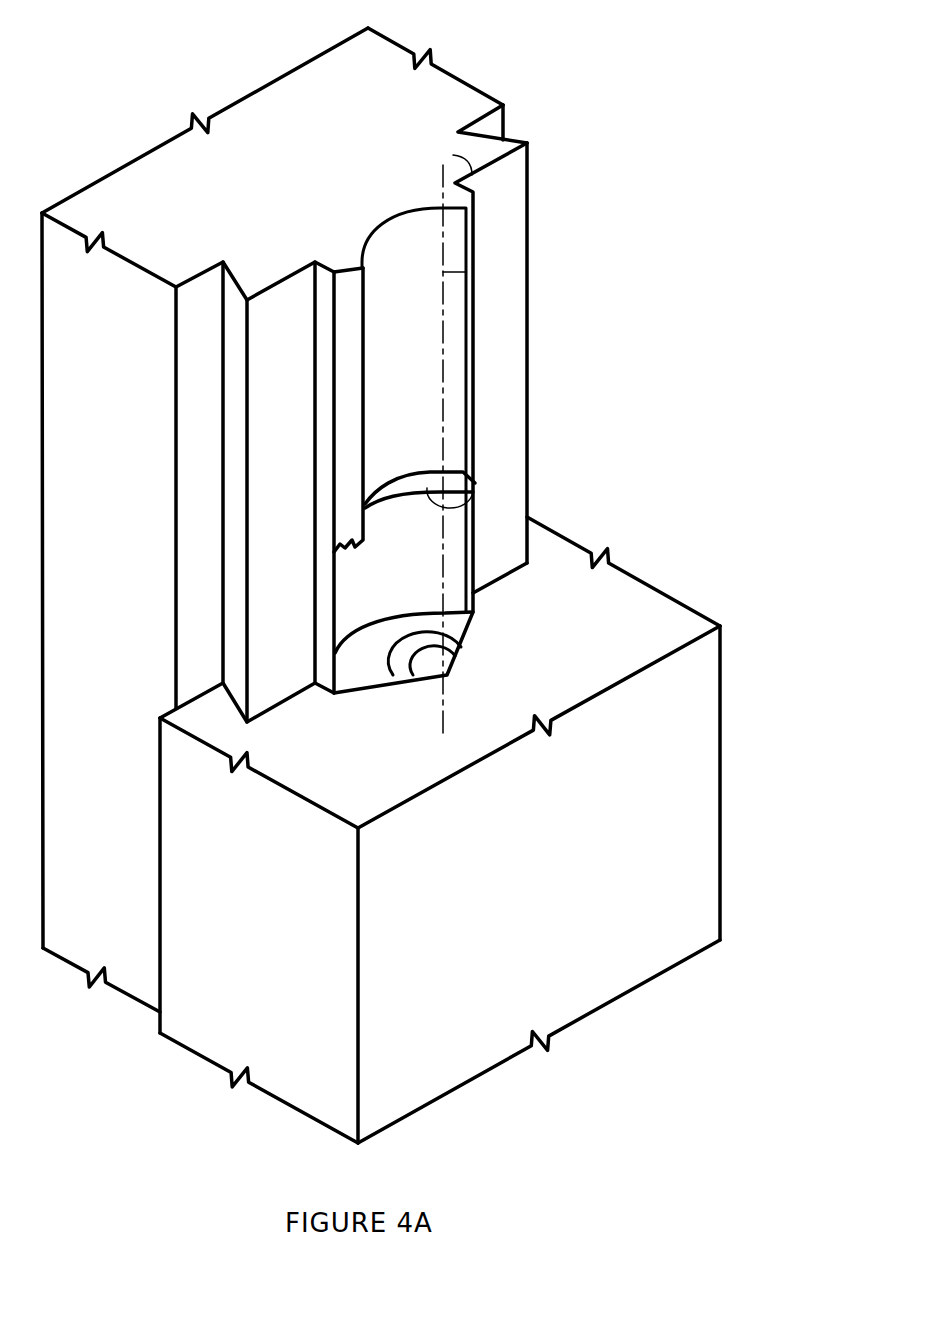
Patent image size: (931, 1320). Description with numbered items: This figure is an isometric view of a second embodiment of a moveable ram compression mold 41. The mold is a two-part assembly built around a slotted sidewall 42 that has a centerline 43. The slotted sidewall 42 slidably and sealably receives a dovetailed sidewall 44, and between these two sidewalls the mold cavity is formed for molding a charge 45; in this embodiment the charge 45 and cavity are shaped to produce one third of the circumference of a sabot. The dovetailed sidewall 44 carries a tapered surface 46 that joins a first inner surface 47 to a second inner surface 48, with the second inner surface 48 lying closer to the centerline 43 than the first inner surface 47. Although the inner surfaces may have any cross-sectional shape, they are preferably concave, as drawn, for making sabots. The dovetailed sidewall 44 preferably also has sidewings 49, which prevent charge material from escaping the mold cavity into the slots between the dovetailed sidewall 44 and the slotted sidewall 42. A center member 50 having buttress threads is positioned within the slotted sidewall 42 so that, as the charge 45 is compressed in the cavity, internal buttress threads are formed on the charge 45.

The moveable ram compression mold 41 is at (598, 150).
The slotted sidewall 42 is at (723, 677).
The centerline 43 is at (443, 272).
The dovetailed sidewall 44 is at (478, 87).
The charge 45 is at (400, 612).
The tapered surface 46 is at (427, 482).
The first inner surface 47 is at (418, 553).
The second inner surface 48 is at (413, 325).
The sidewings 49 is at (453, 155).
The center member 50 is at (447, 631).